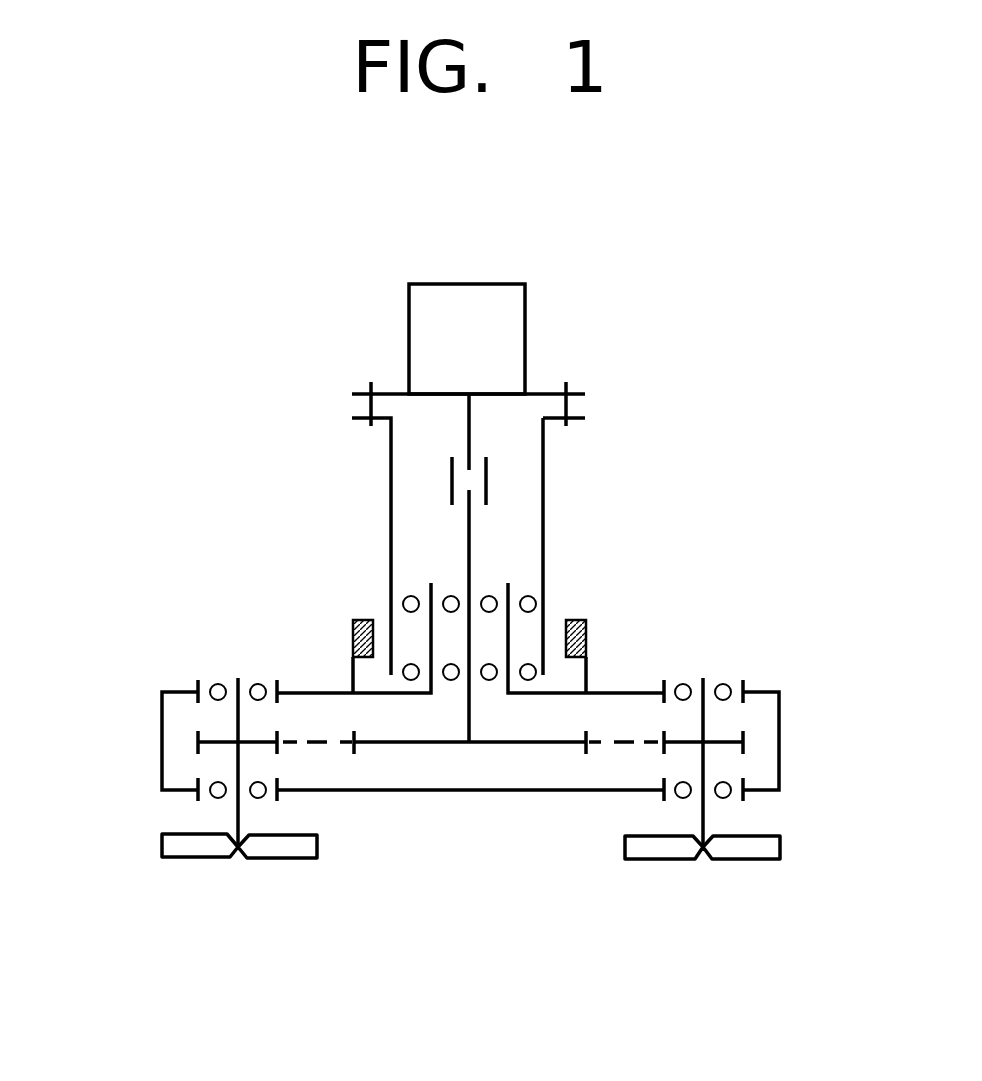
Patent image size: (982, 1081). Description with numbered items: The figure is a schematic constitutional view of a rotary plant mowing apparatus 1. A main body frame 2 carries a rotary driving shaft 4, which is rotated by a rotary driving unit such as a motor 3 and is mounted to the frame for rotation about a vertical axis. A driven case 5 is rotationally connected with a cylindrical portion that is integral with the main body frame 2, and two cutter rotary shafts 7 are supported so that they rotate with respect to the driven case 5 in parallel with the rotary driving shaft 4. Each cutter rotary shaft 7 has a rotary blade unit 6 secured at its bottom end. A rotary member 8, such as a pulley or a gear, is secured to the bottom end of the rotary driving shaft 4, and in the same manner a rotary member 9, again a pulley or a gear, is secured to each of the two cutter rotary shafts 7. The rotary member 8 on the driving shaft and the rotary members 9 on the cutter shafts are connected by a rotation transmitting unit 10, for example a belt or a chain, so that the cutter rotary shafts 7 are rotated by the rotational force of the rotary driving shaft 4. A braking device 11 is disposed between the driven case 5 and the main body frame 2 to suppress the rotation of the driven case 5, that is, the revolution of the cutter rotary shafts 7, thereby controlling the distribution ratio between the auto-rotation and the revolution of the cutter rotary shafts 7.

The plant mowing apparatus 1 is at (727, 476).
The main body frame 2 is at (538, 393).
The motor 3 is at (517, 319).
The rotary driving shaft 4 is at (480, 518).
The driven case 5 is at (322, 690).
The rotary blade unit 6 is at (191, 859).
The cutter rotary shaft 7 is at (238, 814).
The rotary member 8 is at (492, 745).
The rotary member 9 is at (197, 738).
The rotation transmitting unit 10 is at (318, 748).
The braking device 11 is at (587, 637).